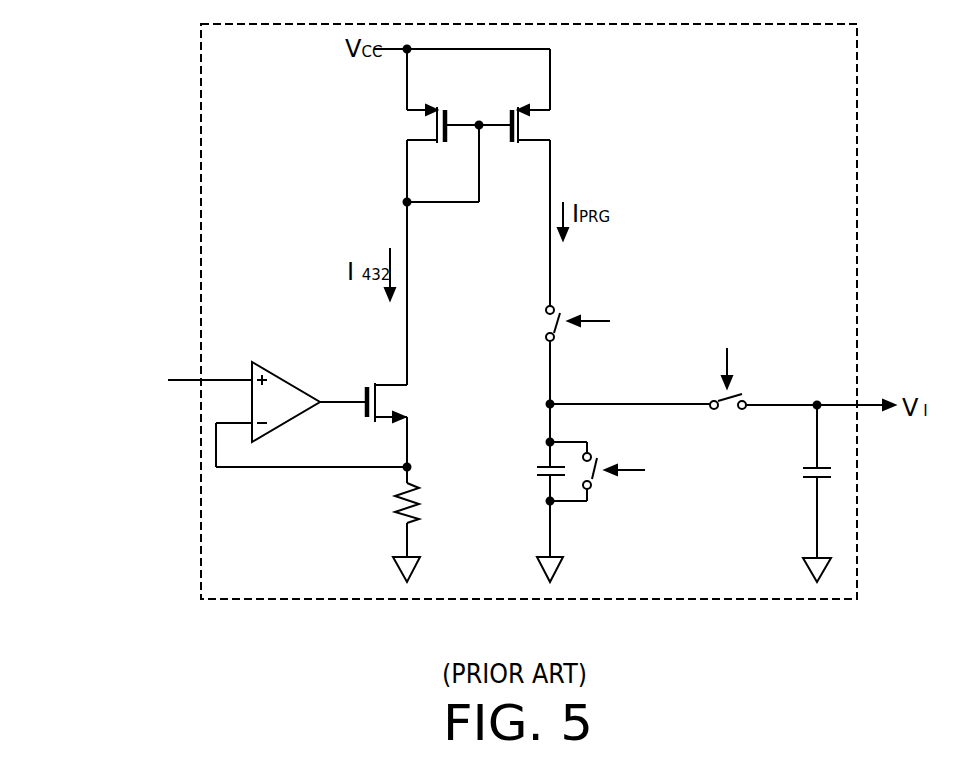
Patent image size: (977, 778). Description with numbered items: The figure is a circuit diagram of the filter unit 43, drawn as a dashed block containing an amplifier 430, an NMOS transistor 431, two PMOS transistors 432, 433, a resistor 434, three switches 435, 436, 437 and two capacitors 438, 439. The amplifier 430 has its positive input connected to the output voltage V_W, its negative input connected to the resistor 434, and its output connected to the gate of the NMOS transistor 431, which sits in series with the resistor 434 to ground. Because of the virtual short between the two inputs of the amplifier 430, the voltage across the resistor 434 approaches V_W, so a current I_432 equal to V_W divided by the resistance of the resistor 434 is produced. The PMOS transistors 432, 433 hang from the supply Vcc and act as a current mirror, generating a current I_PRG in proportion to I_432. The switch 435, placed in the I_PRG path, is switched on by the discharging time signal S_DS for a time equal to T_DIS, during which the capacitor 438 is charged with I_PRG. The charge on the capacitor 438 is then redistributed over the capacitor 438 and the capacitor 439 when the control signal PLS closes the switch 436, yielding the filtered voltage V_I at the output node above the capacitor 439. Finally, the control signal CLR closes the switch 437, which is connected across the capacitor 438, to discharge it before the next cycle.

The filter unit 43 is at (857, 98).
The amplifier 430 is at (288, 377).
The NMOS transistor 431 is at (400, 400).
The PMOS transistor 432 is at (415, 123).
The PMOS transistor 433 is at (546, 125).
The resistor 434 is at (397, 498).
The switch 435 is at (543, 318).
The switch 436 is at (725, 413).
The switch 437 is at (595, 478).
The capacitor 438 is at (535, 473).
The capacitor 439 is at (800, 470).